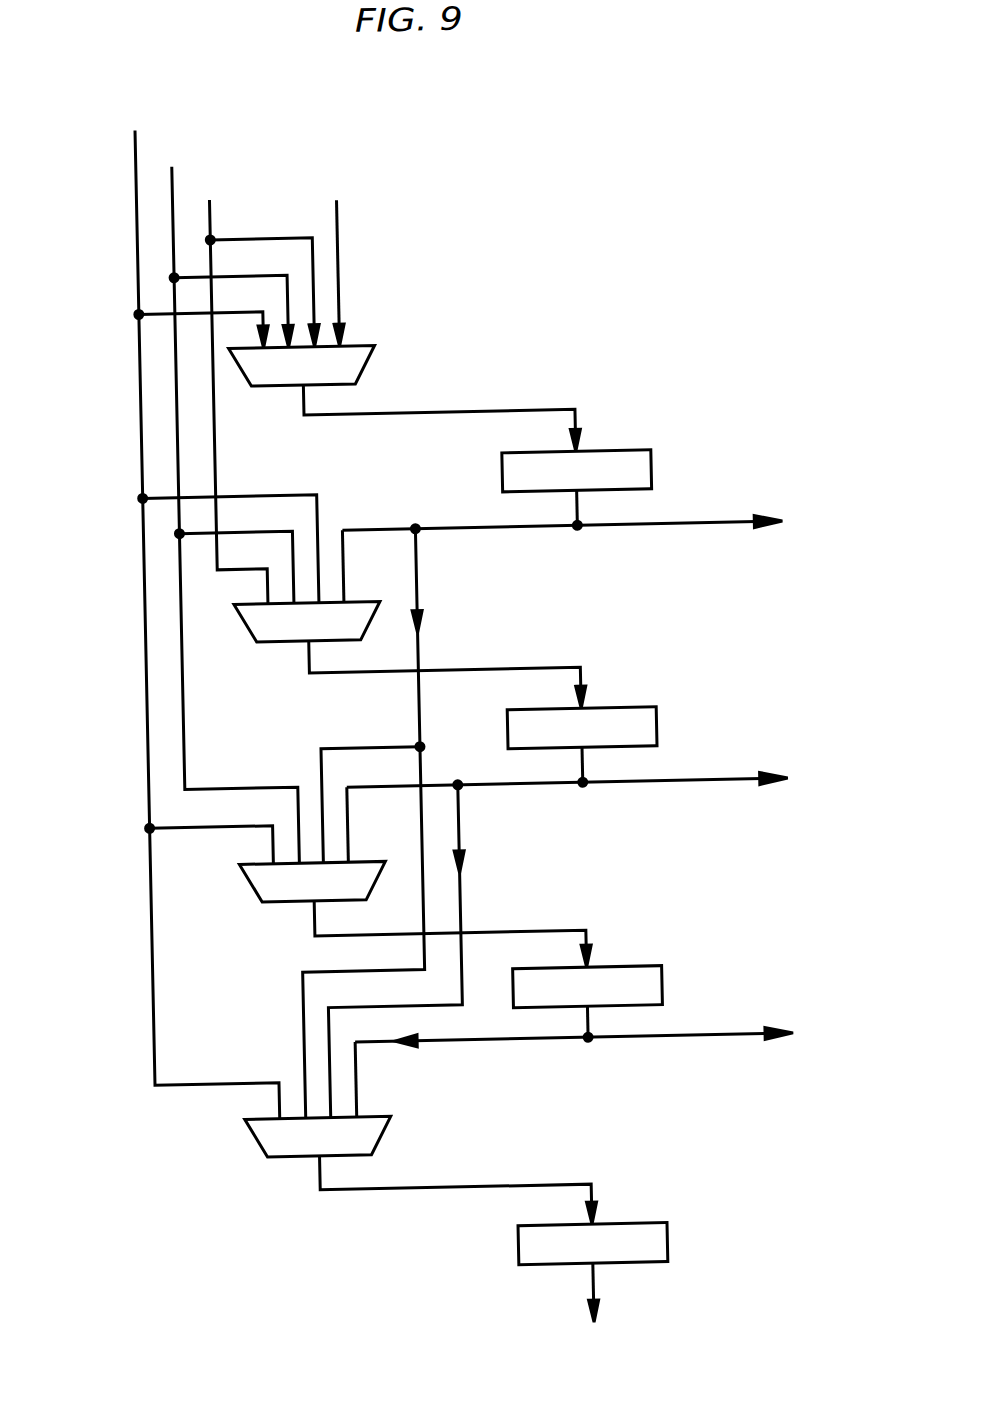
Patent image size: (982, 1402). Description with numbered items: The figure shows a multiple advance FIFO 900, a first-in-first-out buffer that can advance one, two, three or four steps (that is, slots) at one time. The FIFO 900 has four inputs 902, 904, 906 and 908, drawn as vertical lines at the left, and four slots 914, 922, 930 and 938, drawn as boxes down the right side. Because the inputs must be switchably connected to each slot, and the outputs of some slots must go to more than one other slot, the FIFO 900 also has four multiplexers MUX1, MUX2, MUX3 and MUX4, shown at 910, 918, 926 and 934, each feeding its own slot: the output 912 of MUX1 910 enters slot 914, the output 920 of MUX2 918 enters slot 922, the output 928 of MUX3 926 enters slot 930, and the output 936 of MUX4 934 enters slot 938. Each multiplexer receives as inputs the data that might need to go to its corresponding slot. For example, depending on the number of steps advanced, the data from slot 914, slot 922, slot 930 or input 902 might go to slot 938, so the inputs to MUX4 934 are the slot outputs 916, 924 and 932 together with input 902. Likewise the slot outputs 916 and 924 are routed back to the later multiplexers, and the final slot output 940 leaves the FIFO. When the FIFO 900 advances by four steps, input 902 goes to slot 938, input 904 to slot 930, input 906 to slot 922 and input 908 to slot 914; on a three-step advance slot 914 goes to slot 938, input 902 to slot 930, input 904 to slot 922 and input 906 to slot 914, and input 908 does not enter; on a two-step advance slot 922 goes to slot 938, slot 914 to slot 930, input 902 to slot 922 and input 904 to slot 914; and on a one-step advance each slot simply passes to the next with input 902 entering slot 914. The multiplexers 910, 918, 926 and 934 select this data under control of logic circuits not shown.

The multiple advance FIFO 900 is at (644, 197).
The input 902 is at (147, 373).
The input 904 is at (183, 434).
The input 906 is at (220, 475).
The input 908 is at (347, 261).
The MUX1 910 is at (381, 351).
The MUX1 output line 912 is at (504, 413).
The slot 914 is at (633, 452).
The slot 914 output 916 is at (707, 532).
The MUX2 918 is at (249, 628).
The MUX2 output line 920 is at (504, 671).
The slot 922 is at (634, 714).
The slot 922 output 924 is at (704, 788).
The MUX3 926 is at (243, 874).
The MUX3 output line 928 is at (503, 933).
The slot 930 is at (635, 971).
The slot 930 output 932 is at (705, 1048).
The MUX4 934 is at (244, 1131).
The MUX4 output line 936 is at (506, 1188).
The slot 938 is at (642, 1227).
The slot 938 output 940 is at (578, 1285).